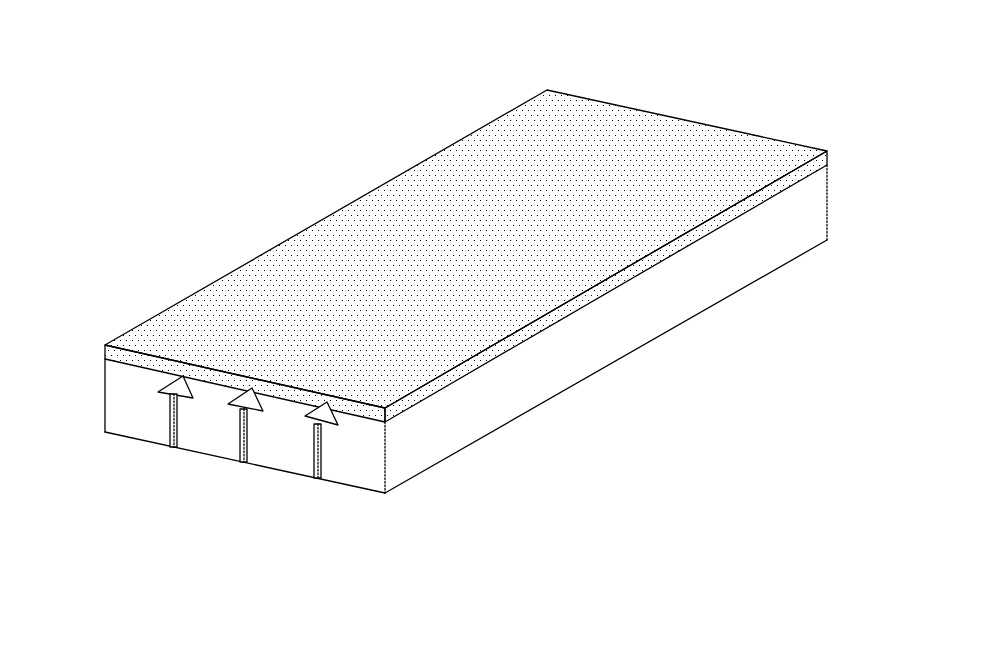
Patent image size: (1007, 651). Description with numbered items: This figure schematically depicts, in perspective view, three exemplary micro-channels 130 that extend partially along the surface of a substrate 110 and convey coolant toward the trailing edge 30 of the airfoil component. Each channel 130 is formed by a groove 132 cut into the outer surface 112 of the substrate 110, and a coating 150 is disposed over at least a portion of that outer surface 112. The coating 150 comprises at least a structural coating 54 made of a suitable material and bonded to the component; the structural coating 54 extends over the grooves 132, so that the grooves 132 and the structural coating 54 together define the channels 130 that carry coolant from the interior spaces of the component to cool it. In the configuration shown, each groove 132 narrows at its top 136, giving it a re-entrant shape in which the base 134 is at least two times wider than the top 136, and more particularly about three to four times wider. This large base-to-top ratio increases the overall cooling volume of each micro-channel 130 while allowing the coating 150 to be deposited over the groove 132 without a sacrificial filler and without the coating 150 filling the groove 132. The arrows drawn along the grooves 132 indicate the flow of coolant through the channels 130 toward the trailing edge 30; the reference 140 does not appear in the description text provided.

The trailing edge 30 is at (683, 77).
The substrate 110 is at (753, 255).
The outer surface 112 is at (398, 413).
The coating 150 is at (466, 226).
The structural coating 54 is at (642, 123).
The channel 130 is at (215, 456).
The groove 132 is at (300, 423).
The base 134 is at (333, 436).
The top 136 is at (164, 379).
The arrow shaft 140 is at (312, 478).